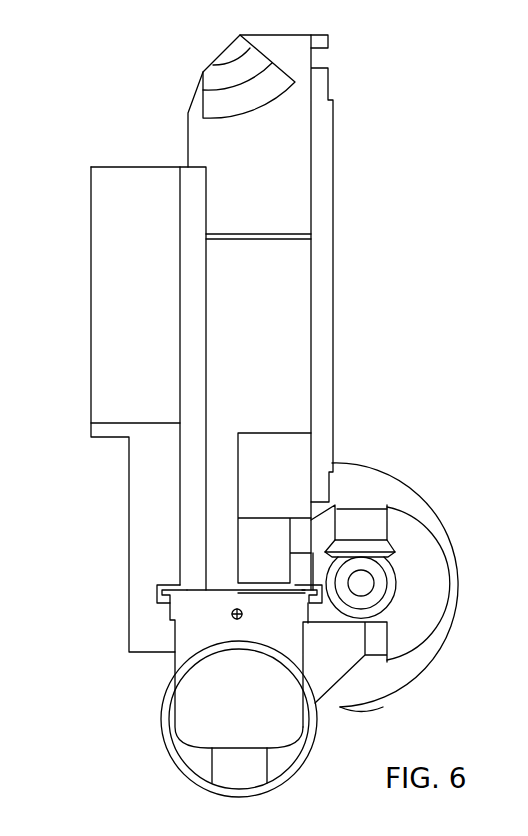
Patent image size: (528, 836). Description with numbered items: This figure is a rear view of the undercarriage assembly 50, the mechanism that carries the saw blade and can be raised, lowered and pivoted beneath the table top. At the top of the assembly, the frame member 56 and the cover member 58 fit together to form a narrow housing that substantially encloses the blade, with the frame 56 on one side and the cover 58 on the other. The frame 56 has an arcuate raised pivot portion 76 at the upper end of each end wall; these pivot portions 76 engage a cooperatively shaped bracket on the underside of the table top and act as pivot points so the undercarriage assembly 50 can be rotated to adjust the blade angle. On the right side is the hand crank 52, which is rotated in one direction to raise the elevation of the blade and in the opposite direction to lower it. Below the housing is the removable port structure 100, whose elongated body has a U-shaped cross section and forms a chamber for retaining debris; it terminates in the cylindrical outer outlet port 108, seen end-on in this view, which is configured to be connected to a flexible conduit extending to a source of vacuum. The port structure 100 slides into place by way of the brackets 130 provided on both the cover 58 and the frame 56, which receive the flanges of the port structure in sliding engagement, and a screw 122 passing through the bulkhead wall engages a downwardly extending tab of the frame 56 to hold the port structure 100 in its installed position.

The undercarriage assembly 50 is at (374, 40).
The hand crank 52 is at (441, 524).
The frame member 56 is at (180, 137).
The cover member 58 is at (100, 450).
The arcuate raised pivot portion 76 is at (237, 70).
The port structure 100 is at (150, 773).
The outer outlet port 108 is at (165, 703).
The screw 122 is at (239, 621).
The bracket 130 is at (157, 592).